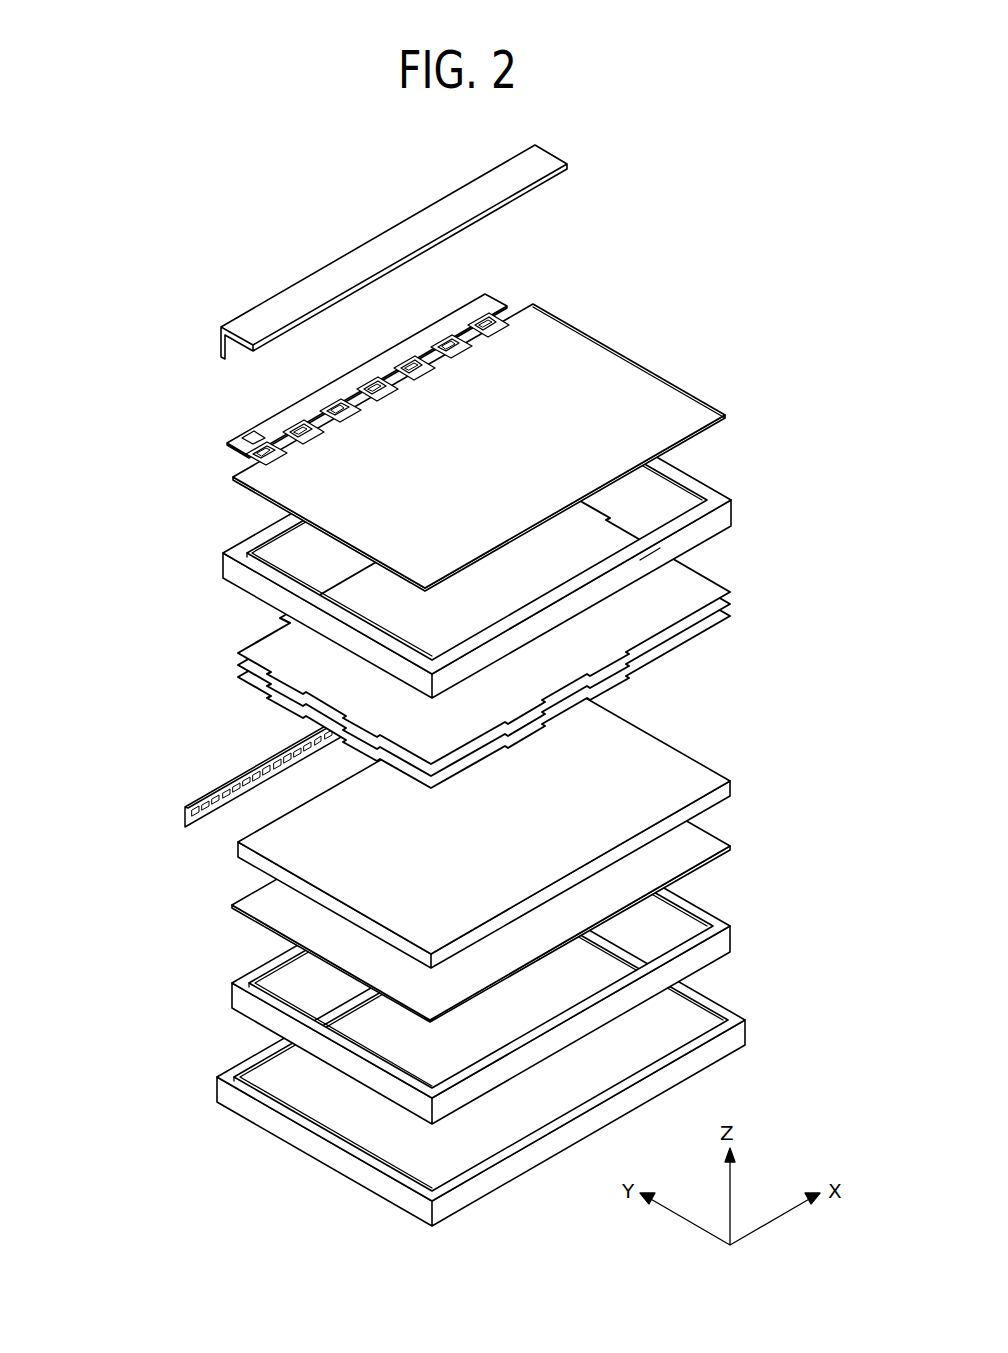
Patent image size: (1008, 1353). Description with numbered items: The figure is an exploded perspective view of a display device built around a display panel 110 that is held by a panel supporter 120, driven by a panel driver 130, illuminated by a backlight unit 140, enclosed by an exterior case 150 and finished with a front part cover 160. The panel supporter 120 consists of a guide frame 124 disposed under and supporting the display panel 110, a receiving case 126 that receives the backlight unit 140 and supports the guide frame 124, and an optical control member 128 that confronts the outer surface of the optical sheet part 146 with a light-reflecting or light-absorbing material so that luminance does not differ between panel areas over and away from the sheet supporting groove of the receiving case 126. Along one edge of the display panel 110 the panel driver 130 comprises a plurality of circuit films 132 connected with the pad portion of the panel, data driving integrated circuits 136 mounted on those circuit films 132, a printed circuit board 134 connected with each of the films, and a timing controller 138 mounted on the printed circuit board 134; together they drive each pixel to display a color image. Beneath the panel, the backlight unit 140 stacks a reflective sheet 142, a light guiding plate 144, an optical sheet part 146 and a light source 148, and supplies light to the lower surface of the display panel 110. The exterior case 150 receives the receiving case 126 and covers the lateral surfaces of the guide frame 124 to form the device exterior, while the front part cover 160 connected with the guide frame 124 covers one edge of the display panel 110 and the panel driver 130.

The display panel 110 is at (625, 368).
The panel supporter 120 is at (466, 752).
The guide frame 124 is at (525, 539).
The receiving case 126 is at (720, 938).
The optical control member 128 is at (627, 541).
The panel driver 130 is at (306, 395).
The circuit films 132 is at (246, 460).
The printed circuit board 134 is at (275, 423).
The data driving integrated circuits 136 is at (258, 451).
The timing controller 138 is at (245, 437).
The backlight unit 140 is at (388, 751).
The reflective sheet 142 is at (233, 909).
The light guiding plate 144 is at (240, 856).
The optical sheet part 146 is at (414, 634).
The light source 148 is at (183, 820).
The exterior case 150 is at (738, 1033).
The front part cover 160 is at (407, 233).